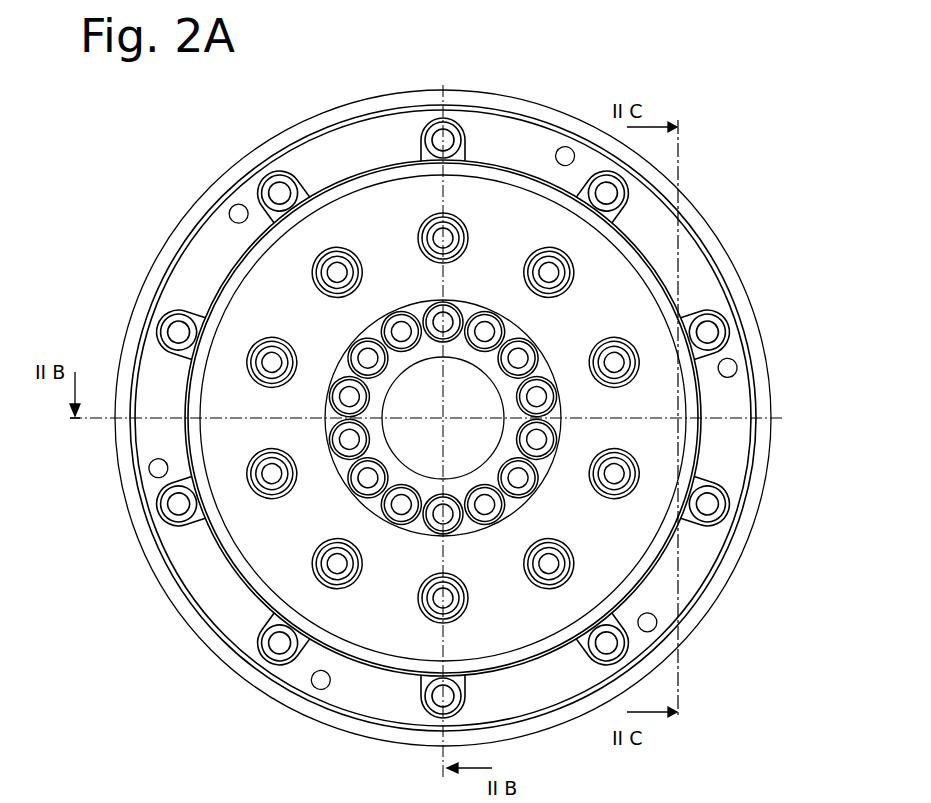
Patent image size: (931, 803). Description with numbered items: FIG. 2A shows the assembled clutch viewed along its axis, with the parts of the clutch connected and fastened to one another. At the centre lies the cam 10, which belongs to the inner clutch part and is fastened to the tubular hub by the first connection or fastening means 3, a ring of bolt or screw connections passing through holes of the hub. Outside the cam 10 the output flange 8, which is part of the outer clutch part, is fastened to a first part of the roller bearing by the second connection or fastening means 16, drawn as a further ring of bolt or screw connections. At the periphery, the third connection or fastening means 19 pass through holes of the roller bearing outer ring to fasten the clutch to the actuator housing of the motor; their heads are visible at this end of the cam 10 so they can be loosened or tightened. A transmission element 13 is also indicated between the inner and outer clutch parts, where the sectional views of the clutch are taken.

The first connection or fastening means 3 is at (523, 478).
The output flange 8 is at (697, 548).
The cam 10 is at (380, 232).
The transmission element 13 is at (690, 418).
The second connection or fastening means 16 is at (269, 357).
The third connection or fastening means 19 is at (718, 322).